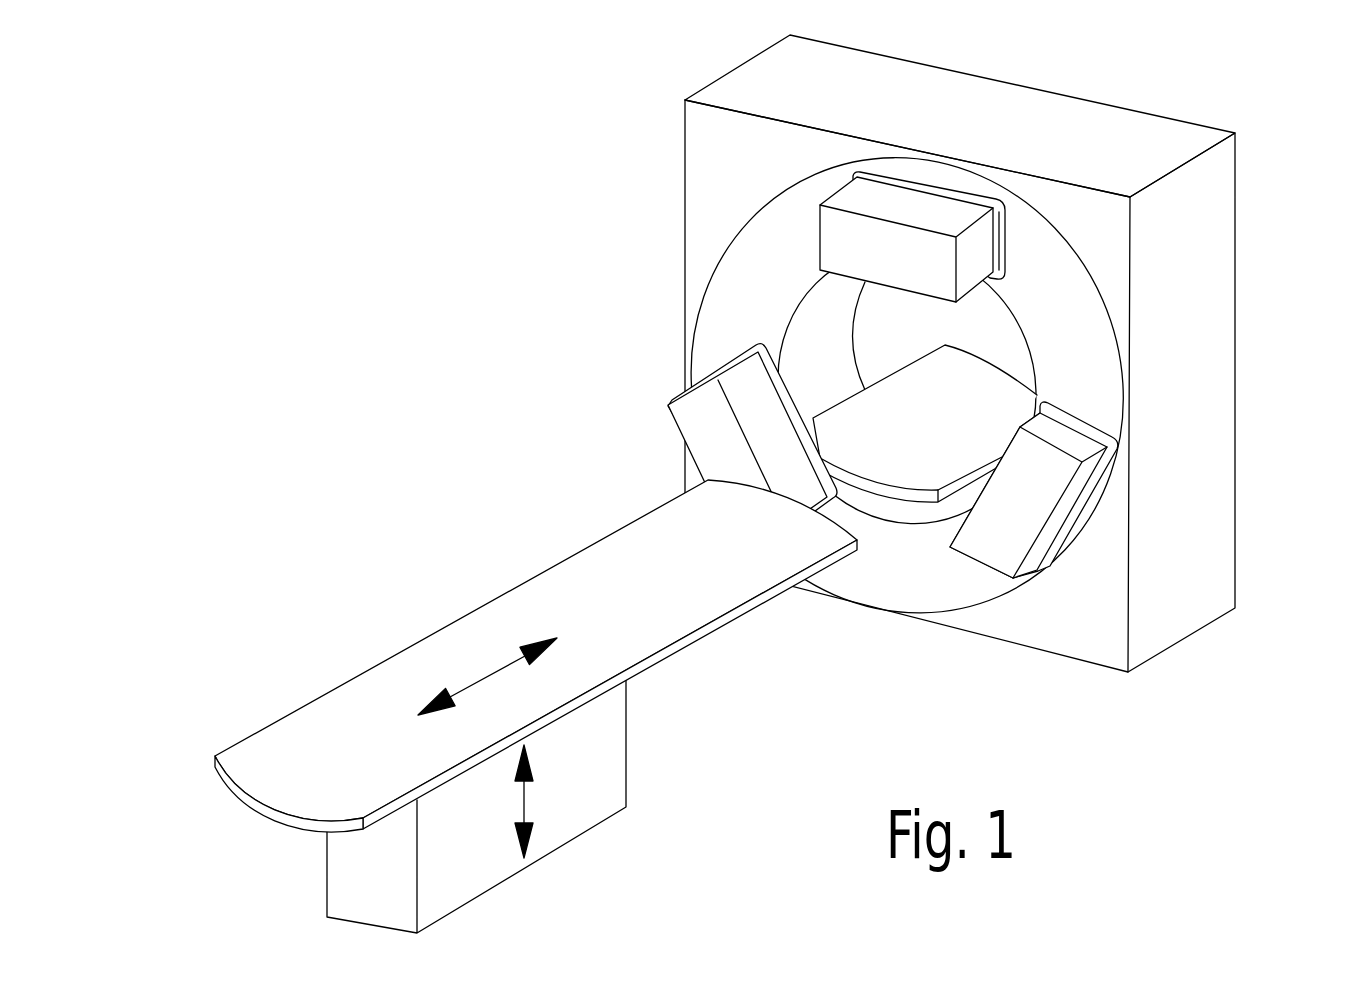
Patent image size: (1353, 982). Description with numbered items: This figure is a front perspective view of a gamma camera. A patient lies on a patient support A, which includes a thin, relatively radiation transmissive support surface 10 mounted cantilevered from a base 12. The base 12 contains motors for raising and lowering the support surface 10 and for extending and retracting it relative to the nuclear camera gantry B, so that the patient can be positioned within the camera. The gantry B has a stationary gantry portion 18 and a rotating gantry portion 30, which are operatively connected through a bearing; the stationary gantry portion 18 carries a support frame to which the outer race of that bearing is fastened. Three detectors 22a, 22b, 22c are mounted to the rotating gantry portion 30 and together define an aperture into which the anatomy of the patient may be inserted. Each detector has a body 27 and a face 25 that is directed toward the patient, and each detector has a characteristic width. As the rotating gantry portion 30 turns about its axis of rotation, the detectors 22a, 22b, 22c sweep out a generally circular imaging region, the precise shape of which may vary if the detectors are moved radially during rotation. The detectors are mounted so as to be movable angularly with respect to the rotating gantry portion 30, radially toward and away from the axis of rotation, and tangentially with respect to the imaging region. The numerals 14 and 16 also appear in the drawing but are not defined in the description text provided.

The support surface 10 is at (366, 740).
The base 12 is at (600, 772).
The bore opening 14 is at (829, 343).
The patient support cradle 16 is at (948, 407).
The stationary gantry portion 18 is at (1193, 530).
The detector 22a is at (893, 250).
The detector 22b is at (1008, 517).
The detector 22c is at (718, 447).
The face 25 is at (745, 386).
The body 27 is at (945, 207).
The rotating gantry portion 30 is at (1070, 353).
The patient support A is at (466, 537).
The nuclear camera gantry B is at (1283, 131).